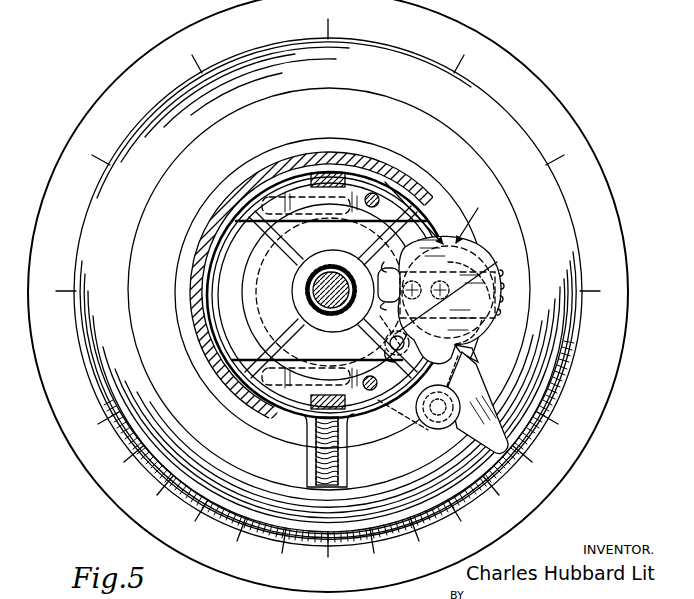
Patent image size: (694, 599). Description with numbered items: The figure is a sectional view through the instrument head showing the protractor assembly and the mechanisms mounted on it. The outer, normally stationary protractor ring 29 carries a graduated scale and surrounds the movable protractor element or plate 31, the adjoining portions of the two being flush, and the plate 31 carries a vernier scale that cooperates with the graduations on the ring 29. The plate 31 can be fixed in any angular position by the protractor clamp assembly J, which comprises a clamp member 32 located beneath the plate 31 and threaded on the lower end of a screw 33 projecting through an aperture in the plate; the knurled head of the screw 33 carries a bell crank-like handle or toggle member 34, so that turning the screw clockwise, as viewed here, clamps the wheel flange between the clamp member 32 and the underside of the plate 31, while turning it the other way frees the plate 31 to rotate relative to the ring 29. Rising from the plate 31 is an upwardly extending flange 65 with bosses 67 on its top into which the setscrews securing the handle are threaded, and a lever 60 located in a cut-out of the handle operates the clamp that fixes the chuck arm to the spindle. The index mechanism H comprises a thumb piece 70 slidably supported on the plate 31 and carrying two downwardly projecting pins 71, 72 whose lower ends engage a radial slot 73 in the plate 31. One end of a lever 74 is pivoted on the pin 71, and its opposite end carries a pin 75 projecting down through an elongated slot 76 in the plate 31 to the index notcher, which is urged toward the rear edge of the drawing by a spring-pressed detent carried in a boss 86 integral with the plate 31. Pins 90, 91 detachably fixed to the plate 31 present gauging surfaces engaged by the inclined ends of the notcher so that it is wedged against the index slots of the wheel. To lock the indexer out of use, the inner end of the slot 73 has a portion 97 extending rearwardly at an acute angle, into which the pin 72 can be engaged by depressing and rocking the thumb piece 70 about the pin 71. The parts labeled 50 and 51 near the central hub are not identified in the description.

The protractor ring 29 is at (100, 106).
The movable protractor plate 31 is at (163, 99).
The clamp mechanism J is at (528, 425).
The lever 60 is at (197, 312).
The flange 65 is at (243, 178).
The pin 91 is at (330, 302).
The spoked carrier plate 50 is at (272, 318).
The central hub 51 is at (307, 290).
The bosses 67 is at (332, 172).
The pin 90 is at (378, 196).
The elongated slot 76 is at (372, 381).
The boss 86 is at (314, 459).
The thumb piece 70 is at (494, 258).
The slot portion 97 is at (390, 272).
The pin 72 is at (438, 272).
The lever 74 is at (449, 312).
The radial slot 73 is at (491, 320).
The pin 71 is at (499, 280).
The pin 75 is at (392, 340).
The index mechanism H is at (431, 213).
The screw 33 is at (468, 393).
The toggle member 34 is at (456, 431).
The clamp member 32 is at (425, 430).